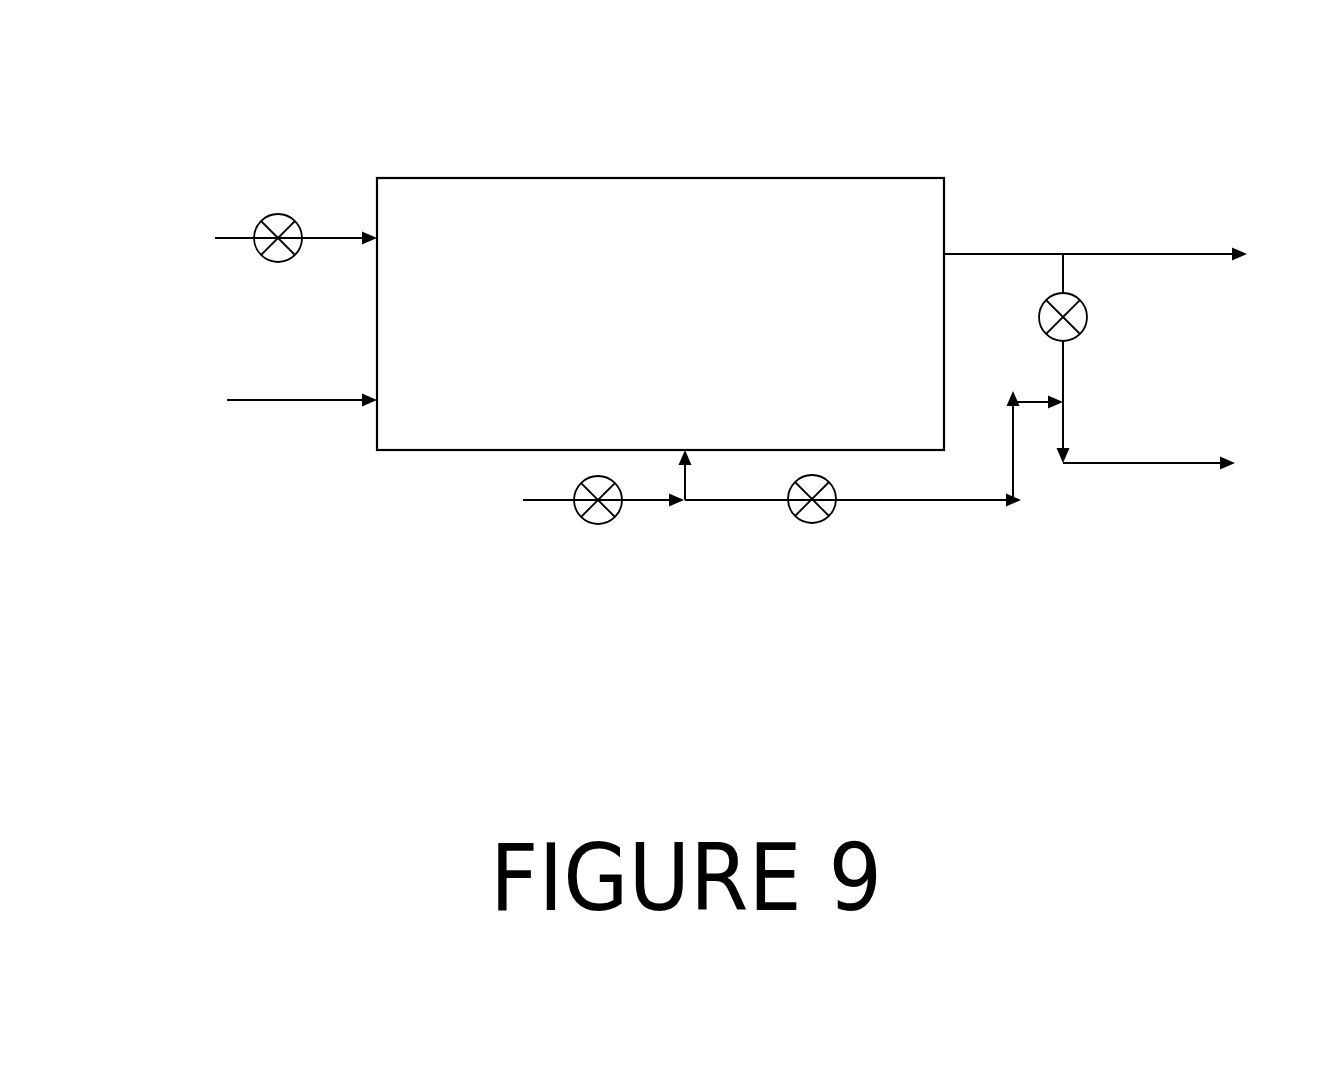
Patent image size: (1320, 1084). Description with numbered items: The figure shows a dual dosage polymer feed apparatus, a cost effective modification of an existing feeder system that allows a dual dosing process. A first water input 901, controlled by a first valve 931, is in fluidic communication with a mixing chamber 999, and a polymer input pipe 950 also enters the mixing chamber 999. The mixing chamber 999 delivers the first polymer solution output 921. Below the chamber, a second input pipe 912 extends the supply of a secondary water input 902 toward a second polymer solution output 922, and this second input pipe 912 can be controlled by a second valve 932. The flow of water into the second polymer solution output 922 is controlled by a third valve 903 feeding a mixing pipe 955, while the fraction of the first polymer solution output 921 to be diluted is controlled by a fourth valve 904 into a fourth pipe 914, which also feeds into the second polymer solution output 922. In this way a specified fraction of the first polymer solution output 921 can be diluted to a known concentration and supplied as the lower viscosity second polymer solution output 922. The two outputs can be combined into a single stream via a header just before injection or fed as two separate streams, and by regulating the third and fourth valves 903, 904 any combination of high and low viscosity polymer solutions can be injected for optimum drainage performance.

The first water input 901 is at (260, 241).
The secondary water input 902 is at (573, 501).
The third valve 903 is at (810, 525).
The fourth valve 904 is at (1085, 303).
The second input pipe 912 is at (650, 502).
The fourth pipe 914 is at (1070, 365).
The first polymer solution output 921 is at (1012, 254).
The second polymer solution output 922 is at (1157, 477).
The first valve 931 is at (270, 213).
The second valve 932 is at (590, 523).
The polymer input pipe 950 is at (265, 402).
The mixing pipe 955 is at (958, 502).
The mixing chamber 999 is at (660, 314).